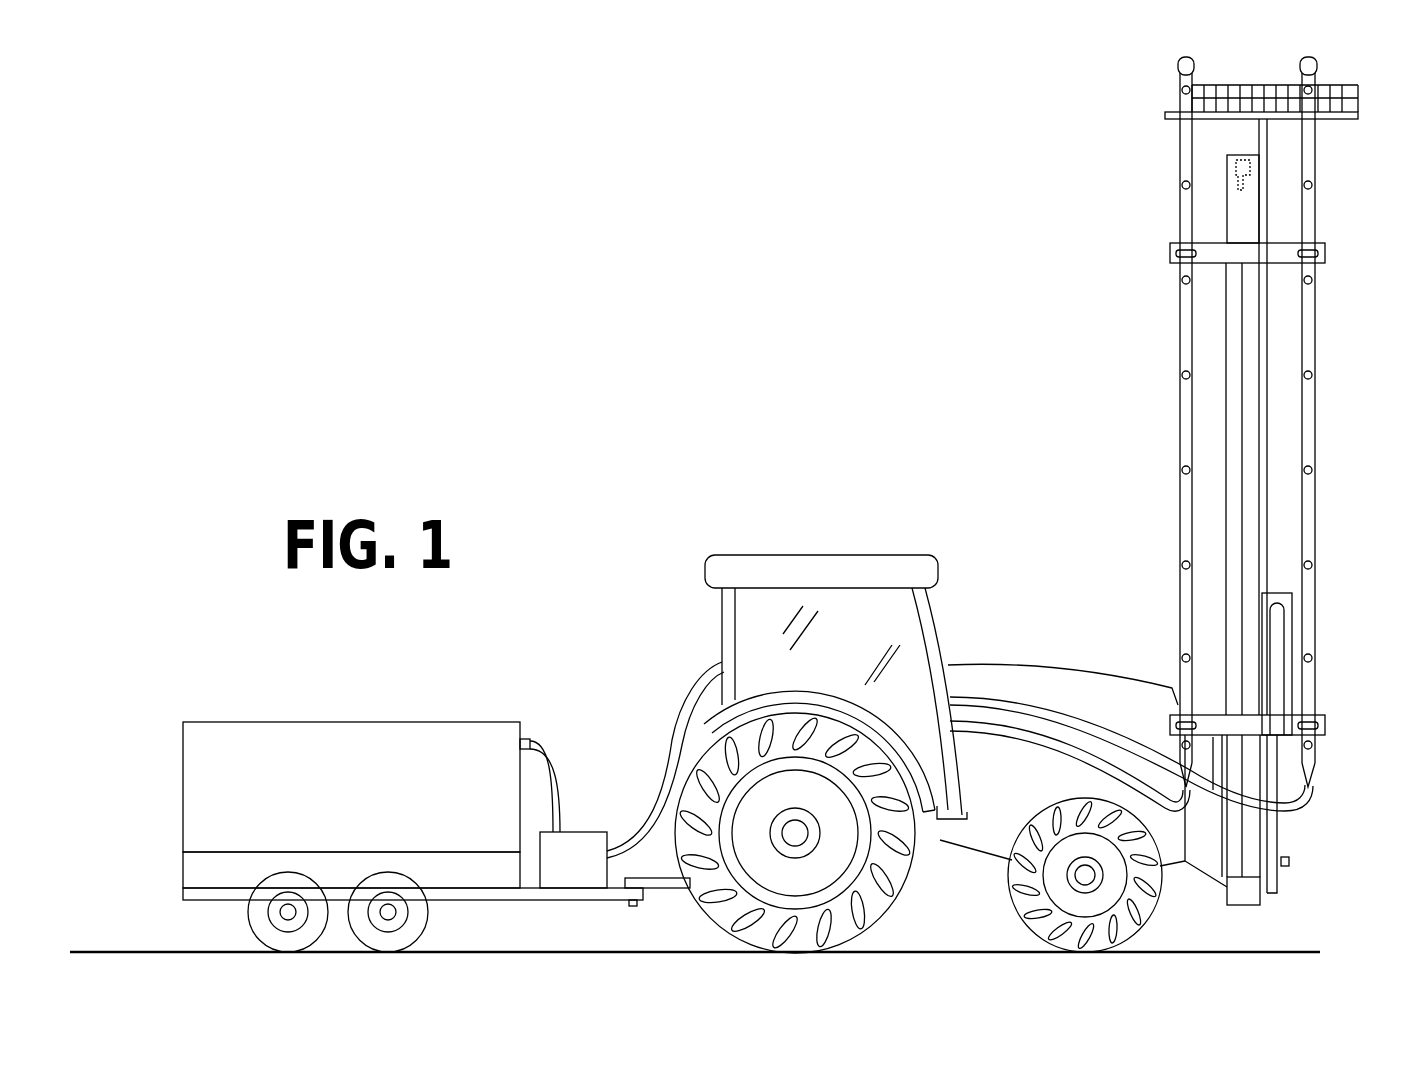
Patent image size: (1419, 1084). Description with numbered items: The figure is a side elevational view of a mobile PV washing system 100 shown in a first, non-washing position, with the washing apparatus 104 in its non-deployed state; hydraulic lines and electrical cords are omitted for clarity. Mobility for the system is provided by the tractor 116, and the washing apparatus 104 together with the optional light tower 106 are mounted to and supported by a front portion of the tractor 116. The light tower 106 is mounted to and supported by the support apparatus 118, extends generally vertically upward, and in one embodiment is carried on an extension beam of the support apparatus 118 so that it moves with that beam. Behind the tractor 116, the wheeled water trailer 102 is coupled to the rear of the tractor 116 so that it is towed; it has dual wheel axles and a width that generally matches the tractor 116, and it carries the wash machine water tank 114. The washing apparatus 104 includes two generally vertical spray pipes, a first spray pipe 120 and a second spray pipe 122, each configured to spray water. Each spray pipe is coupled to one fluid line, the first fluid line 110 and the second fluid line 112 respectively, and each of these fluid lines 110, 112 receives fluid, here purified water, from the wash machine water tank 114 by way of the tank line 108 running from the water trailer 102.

The mobile PV washing system 100 is at (790, 377).
The water trailer 102 is at (165, 750).
The washing apparatus 104 is at (1142, 200).
The light tower 106 is at (1270, 70).
The tank line 108 is at (692, 685).
The first fluid line 110 is at (1055, 745).
The second fluid line 112 is at (1050, 708).
The wash machine water tank 114 is at (383, 796).
The tractor 116 is at (940, 568).
The support apparatus 118 is at (1258, 903).
The first spray pipe 120 is at (1180, 470).
The second spray pipe 122 is at (1316, 470).